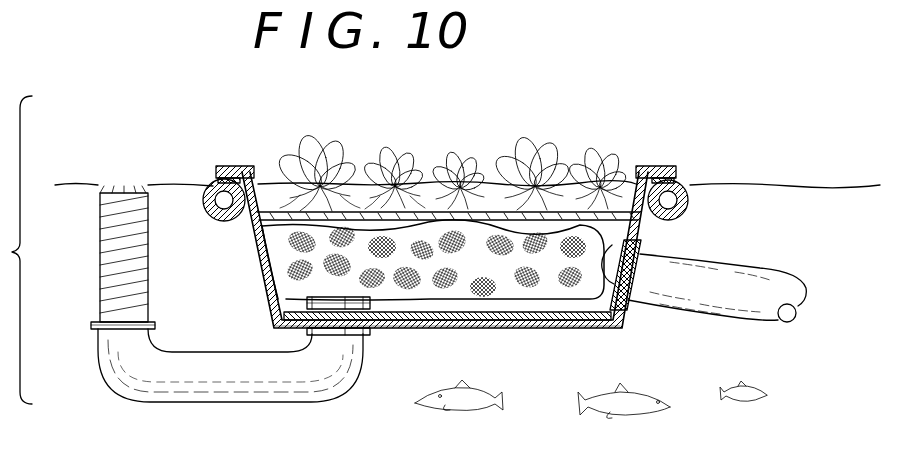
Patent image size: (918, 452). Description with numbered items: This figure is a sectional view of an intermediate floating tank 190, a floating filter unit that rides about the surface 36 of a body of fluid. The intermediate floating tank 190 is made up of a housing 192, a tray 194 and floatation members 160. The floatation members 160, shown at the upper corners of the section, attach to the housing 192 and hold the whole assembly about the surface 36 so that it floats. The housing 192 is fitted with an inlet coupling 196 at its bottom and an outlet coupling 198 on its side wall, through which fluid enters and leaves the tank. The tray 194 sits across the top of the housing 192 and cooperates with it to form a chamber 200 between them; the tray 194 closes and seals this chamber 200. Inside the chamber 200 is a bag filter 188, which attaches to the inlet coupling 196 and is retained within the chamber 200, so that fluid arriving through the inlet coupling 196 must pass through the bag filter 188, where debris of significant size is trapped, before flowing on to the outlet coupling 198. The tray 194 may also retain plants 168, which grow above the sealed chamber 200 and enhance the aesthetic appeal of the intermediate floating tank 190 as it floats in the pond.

The surface 36 is at (165, 183).
The floatation members 160 is at (688, 202).
The plants 168 is at (300, 136).
The bag filter 188 is at (480, 292).
The intermediate floating tank 190 is at (452, 328).
The housing 192 is at (262, 266).
The tray 194 is at (478, 212).
The inlet coupling 196 is at (306, 302).
The outlet coupling 198 is at (624, 246).
The chamber 200 is at (604, 304).